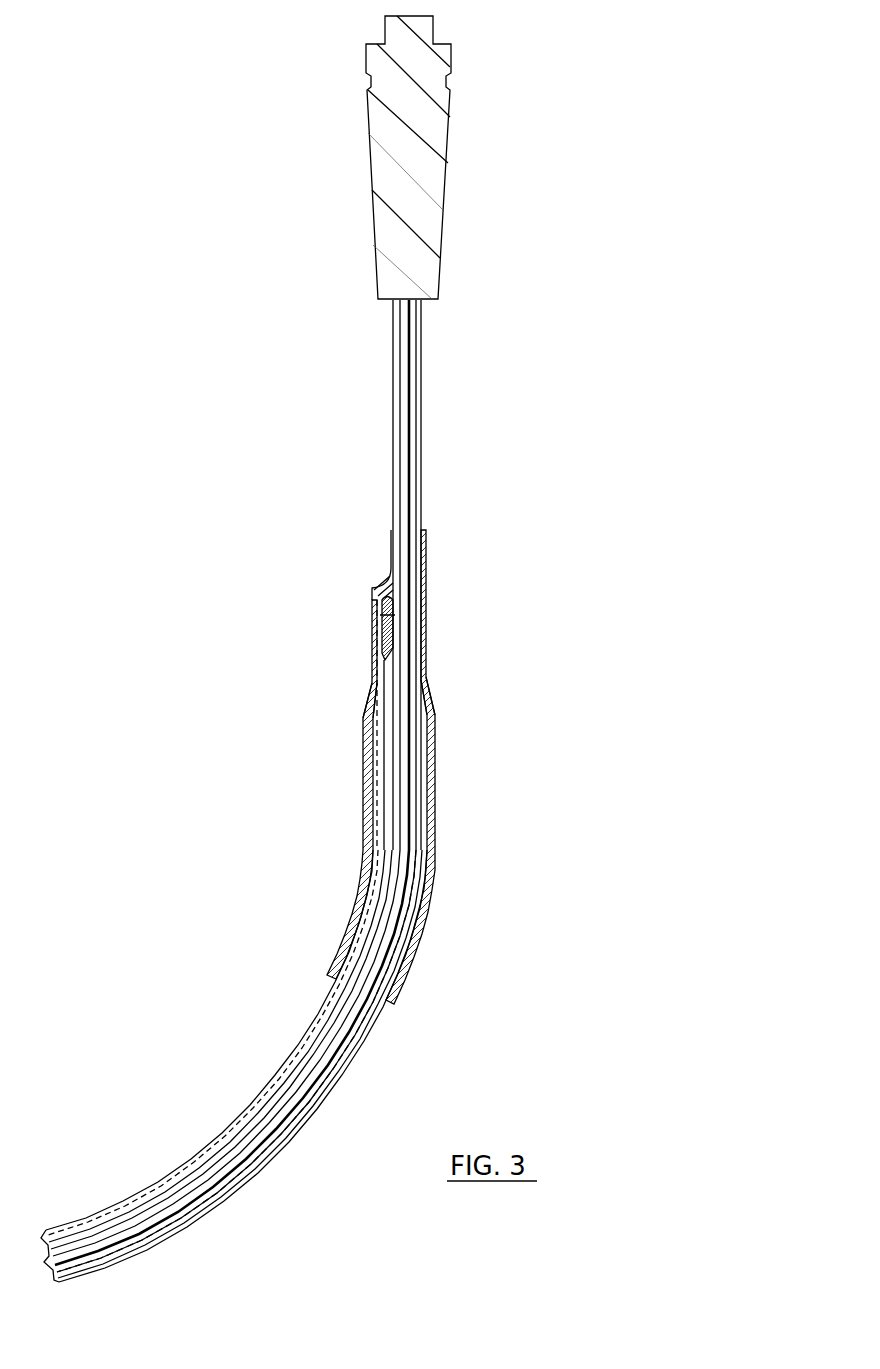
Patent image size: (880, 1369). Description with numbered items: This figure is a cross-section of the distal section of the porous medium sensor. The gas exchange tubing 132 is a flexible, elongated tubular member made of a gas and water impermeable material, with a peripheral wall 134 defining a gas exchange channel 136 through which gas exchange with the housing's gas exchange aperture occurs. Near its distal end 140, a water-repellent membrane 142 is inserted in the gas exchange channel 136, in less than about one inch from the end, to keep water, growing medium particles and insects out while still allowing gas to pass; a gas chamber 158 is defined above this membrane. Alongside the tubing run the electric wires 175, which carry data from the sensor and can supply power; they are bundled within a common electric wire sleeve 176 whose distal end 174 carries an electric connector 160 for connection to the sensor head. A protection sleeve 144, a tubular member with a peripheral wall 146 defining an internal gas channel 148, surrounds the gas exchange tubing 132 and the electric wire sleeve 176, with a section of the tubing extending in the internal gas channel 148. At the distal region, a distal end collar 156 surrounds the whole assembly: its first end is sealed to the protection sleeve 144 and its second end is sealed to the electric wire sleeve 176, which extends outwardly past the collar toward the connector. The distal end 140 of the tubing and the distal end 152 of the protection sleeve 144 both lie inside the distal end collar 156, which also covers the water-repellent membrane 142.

The electric connector 160 is at (451, 127).
The distal end of electric wire sleeve 174 is at (422, 312).
The electric wire sleeve 176 is at (422, 428).
The electric wires 175 is at (403, 907).
The gas chamber 158 is at (372, 599).
The distal end of gas exchange tubing 140 is at (380, 616).
The water-repellent membrane 142 is at (382, 635).
The distal end of protection sleeve 152 is at (430, 694).
The distal end collar 156 is at (436, 786).
The gas exchange channel 136 is at (313, 1038).
The peripheral wall 134 is at (250, 1108).
The gas exchange tubing 132 is at (168, 1182).
The peripheral wall 146 is at (343, 1082).
The protection sleeve 144 is at (263, 1178).
The internal gas channel 148 is at (110, 1257).